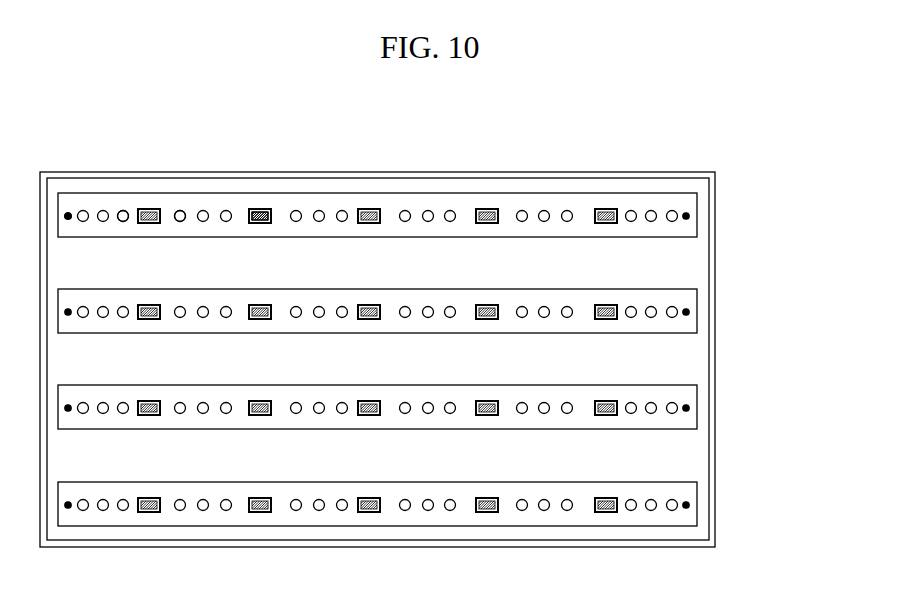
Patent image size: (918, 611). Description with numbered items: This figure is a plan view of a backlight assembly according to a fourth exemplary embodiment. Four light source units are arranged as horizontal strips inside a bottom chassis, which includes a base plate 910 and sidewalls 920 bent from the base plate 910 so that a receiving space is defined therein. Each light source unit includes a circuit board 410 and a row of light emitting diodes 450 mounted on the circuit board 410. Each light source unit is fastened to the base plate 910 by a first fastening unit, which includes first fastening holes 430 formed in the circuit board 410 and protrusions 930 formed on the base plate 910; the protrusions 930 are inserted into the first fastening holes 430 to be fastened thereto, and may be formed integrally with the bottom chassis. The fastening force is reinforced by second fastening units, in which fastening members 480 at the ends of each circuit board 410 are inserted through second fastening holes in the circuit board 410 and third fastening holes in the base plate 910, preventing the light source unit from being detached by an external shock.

The fastening member 480 is at (67, 212).
The circuit board 410 is at (117, 205).
The light emitting diode 450 is at (177, 207).
The protrusion 930 is at (254, 207).
The first fastening hole 430 is at (271, 207).
The sidewall 920 is at (715, 197).
The base plate 910 is at (678, 258).